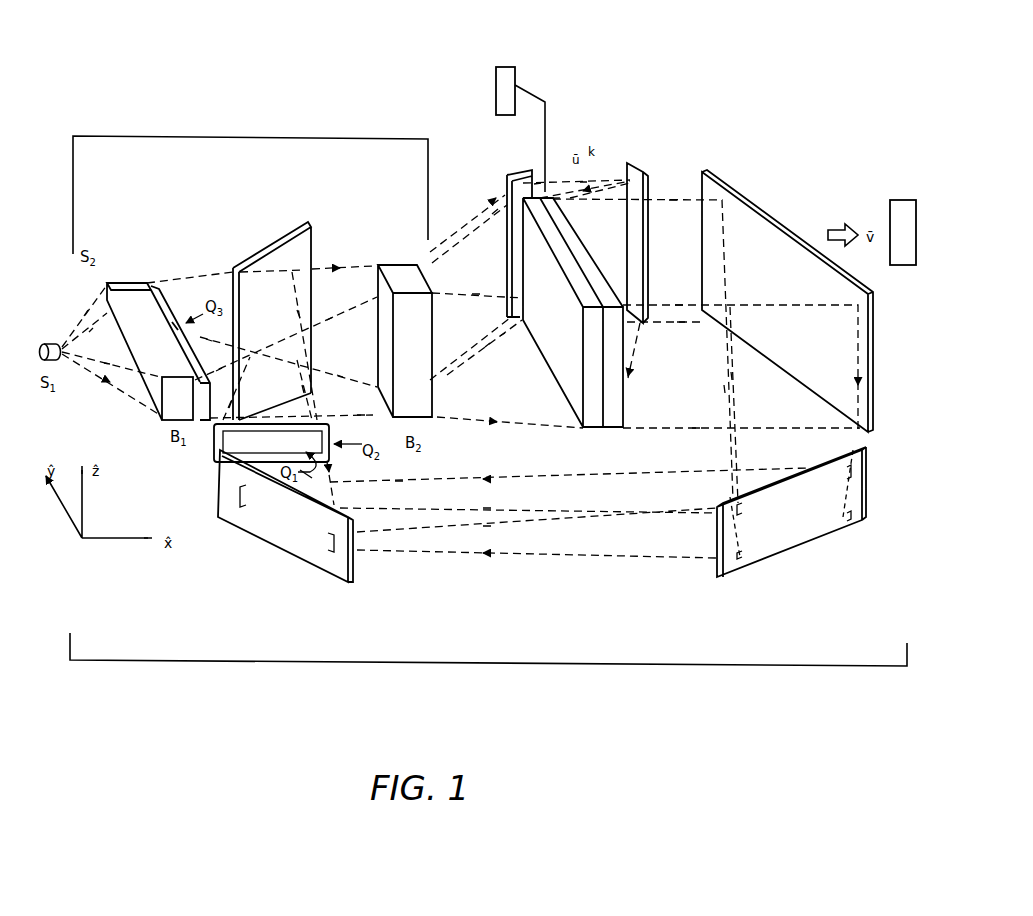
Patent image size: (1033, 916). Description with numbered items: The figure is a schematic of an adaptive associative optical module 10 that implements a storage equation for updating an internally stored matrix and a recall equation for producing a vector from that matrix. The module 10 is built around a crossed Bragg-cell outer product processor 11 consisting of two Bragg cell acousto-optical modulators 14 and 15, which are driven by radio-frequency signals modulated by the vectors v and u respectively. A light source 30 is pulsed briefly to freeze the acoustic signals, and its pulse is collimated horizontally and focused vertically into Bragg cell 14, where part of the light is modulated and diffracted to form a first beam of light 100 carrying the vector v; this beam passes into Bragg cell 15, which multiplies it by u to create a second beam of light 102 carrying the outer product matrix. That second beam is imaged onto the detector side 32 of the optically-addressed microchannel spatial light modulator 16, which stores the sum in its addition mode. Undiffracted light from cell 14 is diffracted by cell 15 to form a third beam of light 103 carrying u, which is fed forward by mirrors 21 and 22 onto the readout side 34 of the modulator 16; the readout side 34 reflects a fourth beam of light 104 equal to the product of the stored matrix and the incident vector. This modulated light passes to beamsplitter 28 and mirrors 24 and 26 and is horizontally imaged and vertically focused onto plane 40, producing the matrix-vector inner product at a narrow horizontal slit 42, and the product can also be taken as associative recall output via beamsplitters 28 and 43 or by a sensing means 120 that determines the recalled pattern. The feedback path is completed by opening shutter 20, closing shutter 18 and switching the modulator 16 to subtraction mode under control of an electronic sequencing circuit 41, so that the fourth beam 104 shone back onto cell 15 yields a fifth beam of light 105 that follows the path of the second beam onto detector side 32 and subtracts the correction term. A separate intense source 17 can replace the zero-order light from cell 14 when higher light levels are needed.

The adaptive associative optical module 10 is at (484, 666).
The crossed Bragg-cell outer product processor 11 is at (268, 136).
The Bragg cell acousto-optical modulator 14 is at (160, 420).
The Bragg cell acousto-optical modulator 15 is at (392, 263).
The microchannel spatial light modulator 16 is at (603, 427).
The separate intense source 17 is at (140, 281).
The electronic shutter 18 is at (160, 287).
The electronic shutter 20 is at (348, 446).
The mirror 21 is at (505, 176).
The mirror 22 is at (646, 166).
The mirror 24 is at (762, 560).
The mirror 26 is at (350, 582).
The beamsplitter 28 is at (740, 200).
The light source 30 is at (52, 343).
The detector side 32 is at (545, 160).
The readout side 34 is at (562, 195).
The plane 40 is at (568, 471).
The electronic sequencing circuit 41 is at (501, 67).
The narrow horizontal slit 42 is at (315, 462).
The beamsplitter 43 is at (258, 253).
The first beam of light 100 is at (215, 272).
The second beam of light 102 is at (465, 270).
The third beam of light 103 is at (449, 245).
The fourth beam of light 104 is at (656, 203).
The fifth beam of light 105 is at (496, 350).
The sensing means 120 is at (891, 200).